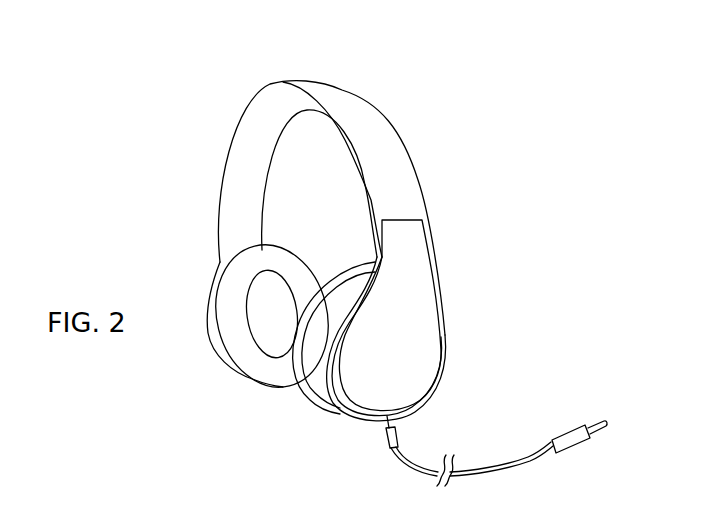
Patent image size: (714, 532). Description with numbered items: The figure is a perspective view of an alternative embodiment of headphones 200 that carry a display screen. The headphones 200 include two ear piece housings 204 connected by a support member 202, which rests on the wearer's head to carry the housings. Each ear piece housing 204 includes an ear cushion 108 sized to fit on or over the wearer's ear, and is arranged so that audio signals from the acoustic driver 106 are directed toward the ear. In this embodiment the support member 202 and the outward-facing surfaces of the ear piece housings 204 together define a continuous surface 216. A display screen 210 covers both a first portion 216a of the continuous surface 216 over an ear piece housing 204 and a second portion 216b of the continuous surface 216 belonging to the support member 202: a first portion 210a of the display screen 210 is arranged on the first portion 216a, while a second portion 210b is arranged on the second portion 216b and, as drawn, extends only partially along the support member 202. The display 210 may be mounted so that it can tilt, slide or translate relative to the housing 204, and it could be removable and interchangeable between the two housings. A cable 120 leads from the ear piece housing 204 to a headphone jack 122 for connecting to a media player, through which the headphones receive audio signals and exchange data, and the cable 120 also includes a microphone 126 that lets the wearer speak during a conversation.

The headphones 200 is at (414, 68).
The support member 202 is at (380, 134).
The ear piece housing 204 is at (442, 400).
The acoustic driver 106 is at (284, 303).
The ear cushion 108 is at (285, 258).
The display screen 210 is at (414, 338).
The first portion of the display screen 210a is at (402, 387).
The second portion of the display screen 210b is at (423, 307).
The continuous surface 216 is at (452, 238).
The first portion of the continuous surface 216a is at (443, 358).
The second portion of the continuous surface 216b is at (407, 174).
The cable 120 is at (407, 455).
The headphone jack 122 is at (572, 428).
The microphone 126 is at (386, 437).